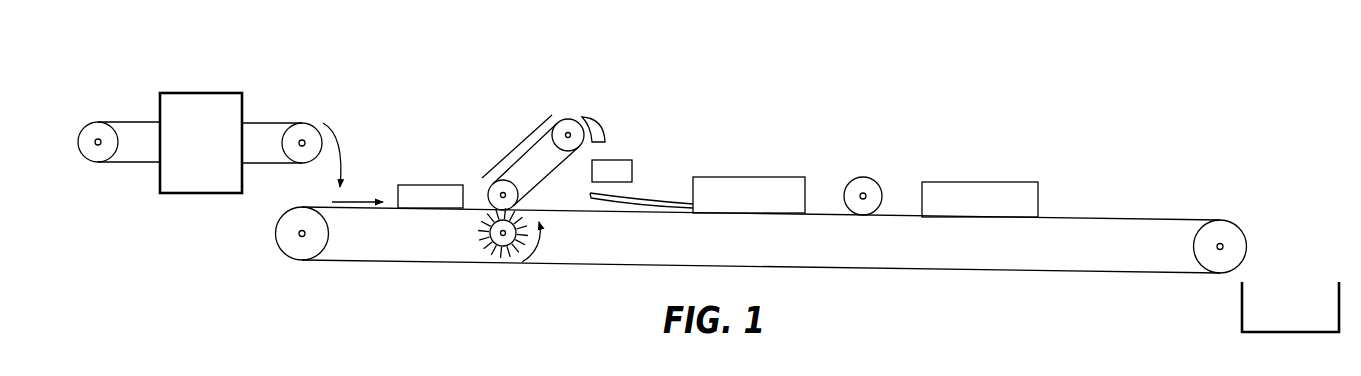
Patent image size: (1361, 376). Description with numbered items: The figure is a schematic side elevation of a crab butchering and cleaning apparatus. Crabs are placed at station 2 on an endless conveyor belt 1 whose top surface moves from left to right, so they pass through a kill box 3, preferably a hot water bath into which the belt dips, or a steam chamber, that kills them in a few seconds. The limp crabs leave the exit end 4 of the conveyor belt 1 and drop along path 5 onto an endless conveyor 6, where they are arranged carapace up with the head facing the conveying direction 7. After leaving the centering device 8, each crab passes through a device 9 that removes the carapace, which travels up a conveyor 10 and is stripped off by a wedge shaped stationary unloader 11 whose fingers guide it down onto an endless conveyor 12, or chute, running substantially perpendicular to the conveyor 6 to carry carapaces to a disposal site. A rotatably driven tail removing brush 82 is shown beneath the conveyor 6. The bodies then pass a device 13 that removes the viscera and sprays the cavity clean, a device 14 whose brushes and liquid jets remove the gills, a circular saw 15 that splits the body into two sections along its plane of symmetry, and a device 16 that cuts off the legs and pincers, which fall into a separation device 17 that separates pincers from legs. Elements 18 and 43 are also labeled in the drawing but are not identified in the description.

The endless conveyor belt 1 is at (125, 163).
The station 2 is at (118, 112).
The kill box 3 is at (188, 151).
The exit end 4 is at (298, 117).
The path 5 is at (342, 147).
The endless conveyor 6 is at (303, 250).
The conveying direction 7 is at (337, 200).
The centering device 8 is at (432, 187).
The device 9 is at (505, 140).
The conveyor 10 is at (547, 177).
The wedge shaped stationary unloader 11 is at (600, 125).
The endless conveyor 12 is at (632, 160).
The device 13 is at (642, 197).
The device 14 is at (750, 177).
The circular saw 15 is at (865, 182).
The device 16 is at (980, 188).
The separation device 17 is at (1260, 333).
The main conveyor end roller 18 is at (1237, 213).
The guide plate 43 is at (542, 115).
The tail removing brush 82 is at (483, 228).